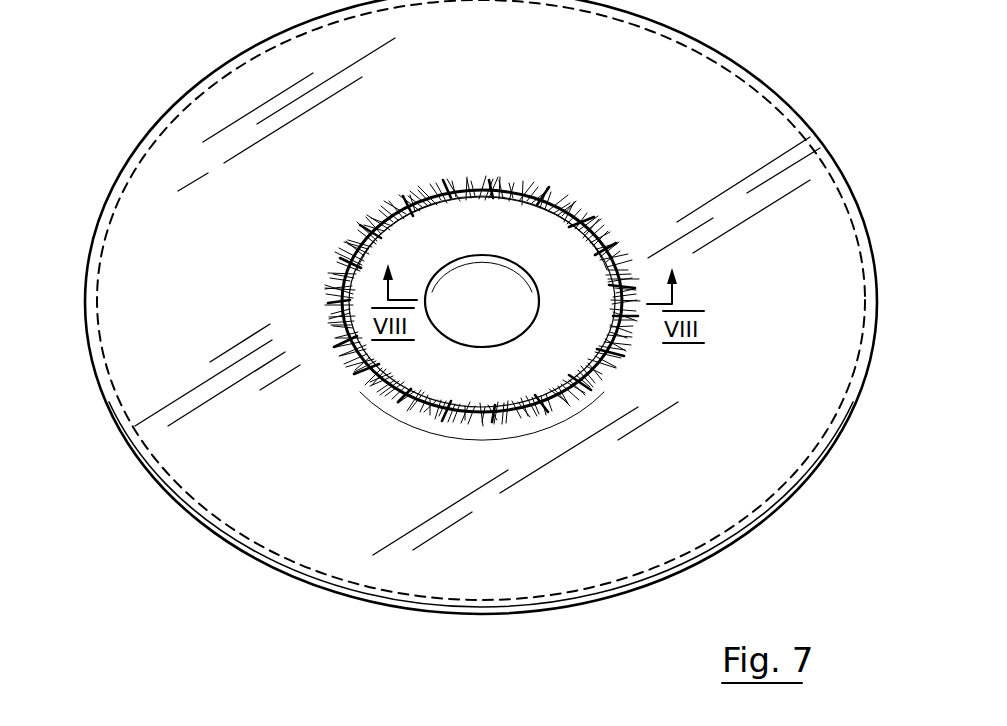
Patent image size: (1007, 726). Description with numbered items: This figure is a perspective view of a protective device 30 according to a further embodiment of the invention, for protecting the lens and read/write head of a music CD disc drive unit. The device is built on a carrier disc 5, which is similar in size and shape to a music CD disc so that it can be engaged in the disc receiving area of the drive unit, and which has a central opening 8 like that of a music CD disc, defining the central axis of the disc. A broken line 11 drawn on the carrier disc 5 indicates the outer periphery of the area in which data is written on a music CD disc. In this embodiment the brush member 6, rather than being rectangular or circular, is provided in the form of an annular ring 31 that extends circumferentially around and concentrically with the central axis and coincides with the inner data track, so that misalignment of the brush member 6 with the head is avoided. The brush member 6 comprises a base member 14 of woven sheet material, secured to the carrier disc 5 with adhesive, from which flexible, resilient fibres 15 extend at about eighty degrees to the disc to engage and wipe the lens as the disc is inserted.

The protective device 30 is at (812, 92).
The broken line 11 is at (700, 41).
The carrier disc 5 is at (162, 454).
The brush member 6 is at (433, 178).
The annular ring 31 is at (570, 197).
The fibres 15 is at (467, 413).
The base member 14 is at (462, 421).
The central opening 8 is at (530, 322).